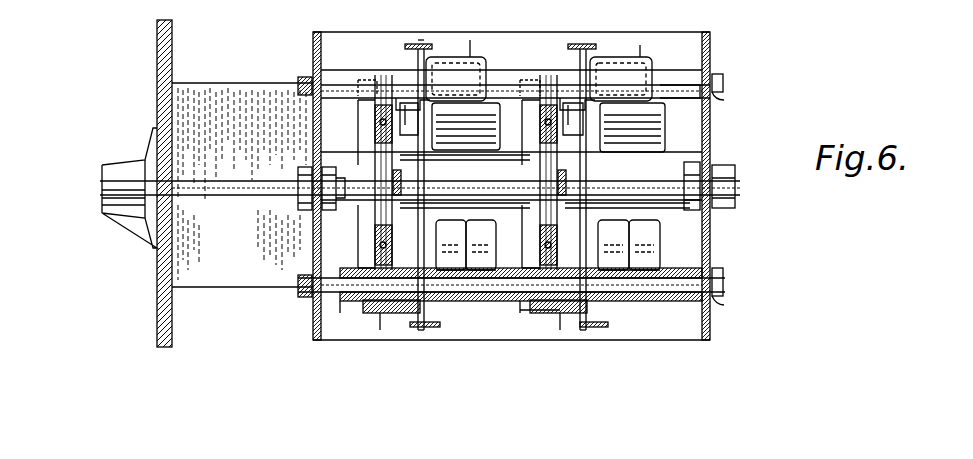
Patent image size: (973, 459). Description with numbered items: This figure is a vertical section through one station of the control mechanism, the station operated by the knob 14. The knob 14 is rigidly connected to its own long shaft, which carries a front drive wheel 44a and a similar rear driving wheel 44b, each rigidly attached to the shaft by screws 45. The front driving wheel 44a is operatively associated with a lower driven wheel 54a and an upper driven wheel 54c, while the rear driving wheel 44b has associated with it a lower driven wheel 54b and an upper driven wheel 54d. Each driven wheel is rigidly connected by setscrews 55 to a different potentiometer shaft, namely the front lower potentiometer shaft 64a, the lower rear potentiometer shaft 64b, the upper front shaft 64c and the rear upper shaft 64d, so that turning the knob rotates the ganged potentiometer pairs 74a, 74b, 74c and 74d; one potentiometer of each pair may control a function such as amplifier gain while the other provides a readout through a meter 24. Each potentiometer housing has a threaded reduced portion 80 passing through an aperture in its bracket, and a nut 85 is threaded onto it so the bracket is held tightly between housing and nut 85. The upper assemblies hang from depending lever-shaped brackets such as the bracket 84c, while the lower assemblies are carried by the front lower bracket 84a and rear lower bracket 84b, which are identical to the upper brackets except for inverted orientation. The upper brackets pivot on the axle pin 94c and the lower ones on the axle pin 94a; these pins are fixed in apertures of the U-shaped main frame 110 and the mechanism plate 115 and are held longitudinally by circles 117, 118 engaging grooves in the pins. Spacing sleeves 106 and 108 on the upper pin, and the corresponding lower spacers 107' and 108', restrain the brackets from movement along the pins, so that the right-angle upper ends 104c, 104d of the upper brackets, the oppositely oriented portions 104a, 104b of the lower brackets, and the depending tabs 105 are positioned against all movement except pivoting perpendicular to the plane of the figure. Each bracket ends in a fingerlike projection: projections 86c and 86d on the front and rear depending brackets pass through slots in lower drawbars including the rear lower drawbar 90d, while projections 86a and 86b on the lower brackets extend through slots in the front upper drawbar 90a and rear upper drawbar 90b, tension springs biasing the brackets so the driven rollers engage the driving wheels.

The knob 14 is at (120, 165).
The meter 24 is at (235, 196).
The front drive wheel 44a is at (325, 167).
The rear driving wheel 44b is at (530, 172).
The screws 45 is at (398, 170).
The lower driven wheel 54a is at (358, 242).
The lower driven wheel 54b is at (522, 230).
The upper driven wheel 54c is at (358, 110).
The upper driven wheel 54d is at (522, 100).
The setscrews 55 is at (380, 105).
The front lower potentiometer shaft 64a is at (395, 240).
The lower rear potentiometer shaft 64b is at (560, 240).
The upper front potentiometer shaft 64c is at (375, 130).
The rear upper potentiometer shaft 64d is at (565, 130).
The ganged potentiometer pair 74a is at (510, 302).
The ganged potentiometer pair 74b is at (710, 232).
The ganged potentiometer pair 74c is at (505, 70).
The ganged potentiometer pair 74d is at (665, 132).
The threaded reduced portion 80 is at (410, 100).
The front lower bracket 84a is at (690, 197).
The rear lower bracket 84b is at (548, 310).
The front upper depending bracket 84c is at (465, 164).
The nut 85 is at (430, 105).
The projection 86a is at (421, 44).
The projection 86b is at (421, 330).
The fingerlike projection 86c is at (590, 44).
The fingerlike projection 86d is at (586, 330).
The front upper drawbar 90a is at (415, 44).
The rear upper drawbar 90b is at (430, 327).
The rear lower drawbar 90d is at (605, 327).
The lower axle pin 94a is at (724, 282).
The upper axle pin 94c is at (724, 82).
The bracket end portion 104a is at (380, 330).
The bracket end portion 104b is at (560, 330).
The right-angle upper end 104c is at (450, 57).
The right-angle upper end 104d is at (640, 57).
The depending tab 105 is at (672, 70).
The spacing sleeve 106 is at (712, 45).
The lower tubular spacer 107' is at (521, 298).
The spacing sleeve 108 is at (511, 171).
The lower tubular spacer 108' is at (606, 310).
The main frame 110 is at (710, 148).
The mechanism plate 115 is at (313, 42).
The retaining circle 117 is at (300, 80).
The retaining circle 118 is at (724, 100).